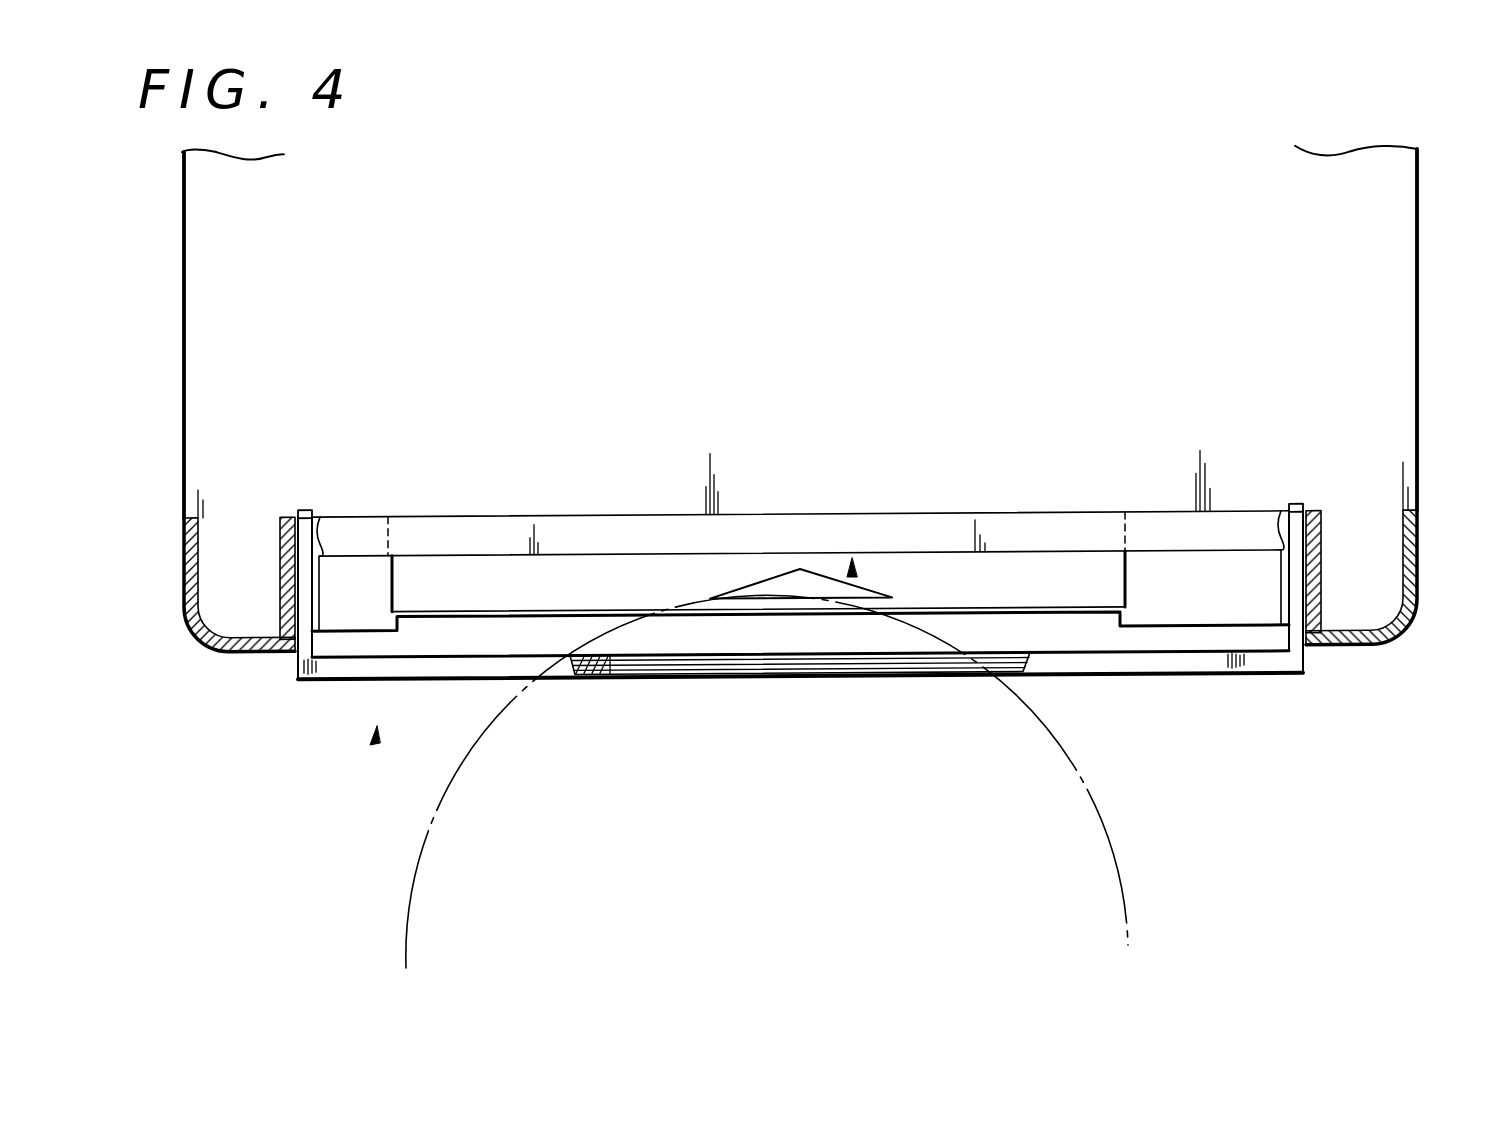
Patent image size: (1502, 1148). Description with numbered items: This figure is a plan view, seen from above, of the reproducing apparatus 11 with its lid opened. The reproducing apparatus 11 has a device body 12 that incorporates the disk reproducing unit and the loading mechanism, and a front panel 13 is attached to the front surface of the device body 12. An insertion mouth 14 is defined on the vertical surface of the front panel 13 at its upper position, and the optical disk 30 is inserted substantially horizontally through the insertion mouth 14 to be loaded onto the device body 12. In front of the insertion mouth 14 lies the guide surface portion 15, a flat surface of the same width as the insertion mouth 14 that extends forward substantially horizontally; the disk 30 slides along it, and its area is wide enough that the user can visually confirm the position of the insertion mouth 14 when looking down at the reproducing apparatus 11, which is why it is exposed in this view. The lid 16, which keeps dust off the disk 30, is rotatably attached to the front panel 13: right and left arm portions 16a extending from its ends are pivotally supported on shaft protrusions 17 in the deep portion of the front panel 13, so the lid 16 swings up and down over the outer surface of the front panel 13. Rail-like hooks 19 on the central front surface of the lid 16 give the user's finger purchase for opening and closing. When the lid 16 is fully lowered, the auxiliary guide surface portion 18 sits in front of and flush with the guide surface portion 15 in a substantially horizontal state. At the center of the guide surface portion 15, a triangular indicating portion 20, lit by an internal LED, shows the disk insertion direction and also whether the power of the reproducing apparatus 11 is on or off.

The reproducing apparatus 11 is at (377, 735).
The device body 12 is at (1418, 345).
The front panel 13 is at (1358, 643).
The insertion mouth 14 is at (852, 572).
The guide surface portion 15 is at (683, 582).
The lid 16 is at (1112, 678).
The arm portion 16a is at (292, 583).
The shaft protrusion 17 is at (302, 510).
The auxiliary guide surface portion 18 is at (737, 647).
The hooks 19 is at (632, 663).
The indicating portion 20 is at (800, 595).
The optical disk 30 is at (1113, 873).